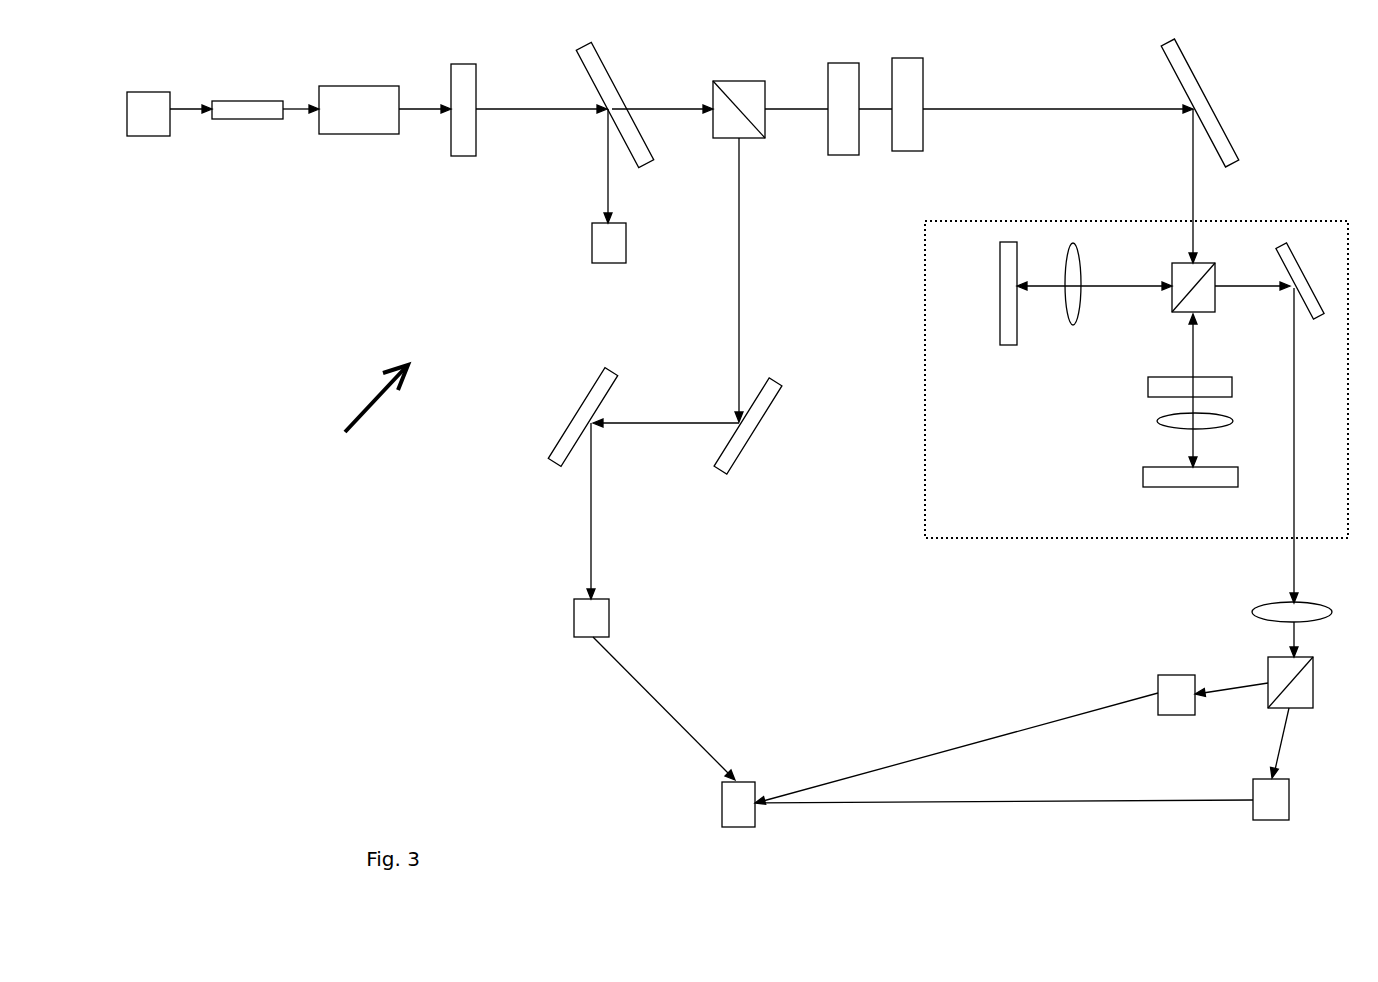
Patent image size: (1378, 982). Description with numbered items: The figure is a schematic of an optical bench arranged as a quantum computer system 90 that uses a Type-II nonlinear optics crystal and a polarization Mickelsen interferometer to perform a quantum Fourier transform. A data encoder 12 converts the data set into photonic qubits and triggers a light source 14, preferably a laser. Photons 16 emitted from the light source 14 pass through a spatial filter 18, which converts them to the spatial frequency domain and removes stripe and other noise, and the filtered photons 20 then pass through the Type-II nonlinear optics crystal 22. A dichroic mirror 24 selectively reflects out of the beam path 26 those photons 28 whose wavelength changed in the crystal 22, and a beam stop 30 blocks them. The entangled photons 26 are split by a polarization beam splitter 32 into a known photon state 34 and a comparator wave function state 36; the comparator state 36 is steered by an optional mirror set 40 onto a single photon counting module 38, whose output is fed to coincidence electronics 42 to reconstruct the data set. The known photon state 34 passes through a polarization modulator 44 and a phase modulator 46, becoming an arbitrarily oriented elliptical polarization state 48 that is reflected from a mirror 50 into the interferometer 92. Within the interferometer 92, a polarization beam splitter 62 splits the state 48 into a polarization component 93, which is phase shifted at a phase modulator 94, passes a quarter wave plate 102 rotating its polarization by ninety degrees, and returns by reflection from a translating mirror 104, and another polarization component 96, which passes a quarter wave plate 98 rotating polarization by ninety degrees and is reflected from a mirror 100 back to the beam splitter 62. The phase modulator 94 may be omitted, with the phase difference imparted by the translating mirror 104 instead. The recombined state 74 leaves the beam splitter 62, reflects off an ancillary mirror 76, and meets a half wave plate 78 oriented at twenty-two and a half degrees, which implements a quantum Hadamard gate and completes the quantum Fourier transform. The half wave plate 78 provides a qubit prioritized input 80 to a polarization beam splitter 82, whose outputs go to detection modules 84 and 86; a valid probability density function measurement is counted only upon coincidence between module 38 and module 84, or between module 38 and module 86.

The data encoder 12 is at (148, 114).
The light source 14 is at (226, 110).
The photons 16 is at (301, 115).
The spatial filter 18 is at (359, 110).
The photons 20 is at (431, 113).
The Type-II nonlinear optics crystal 22 is at (463, 110).
The dichroic mirror 24 is at (565, 104).
The entangled photons 26 is at (663, 110).
The photons 28 is at (612, 166).
The beam stop 30 is at (609, 243).
The polarization beam splitter 32 is at (739, 98).
The known photon state 34 is at (797, 110).
The comparator wave function state 36 is at (737, 302).
The single photon counting module 38 is at (591, 530).
The mirror set 40 is at (580, 430).
The coincidence electronics 42 is at (674, 732).
The polarization modulator 44 is at (843, 109).
The phase modulator 46 is at (891, 104).
The arbitrarily oriented elliptical polarization state 48 is at (1033, 109).
The mirror 50 is at (1208, 118).
The polarization beam splitter 62 is at (1182, 281).
The recombined state 74 is at (1292, 558).
The mirror 76 is at (1269, 273).
The half wave plate oriented at 22.5 degrees 78 is at (1270, 617).
The qubit prioritized input 80 is at (1292, 632).
The polarization beam splitter 82 is at (1290, 682).
The module 84 is at (1011, 739).
The module 86 is at (1023, 764).
The system 90 is at (352, 422).
The interferometer 92 is at (917, 297).
The polarization component 93 is at (1190, 345).
The phase modulator 94 is at (1170, 384).
The polarization component 96 is at (1127, 287).
The quarter wave plate 98 is at (1089, 283).
The mirror 100 is at (987, 293).
The quarter wave plate 102 is at (1171, 426).
The translating mirror 104 is at (1190, 494).